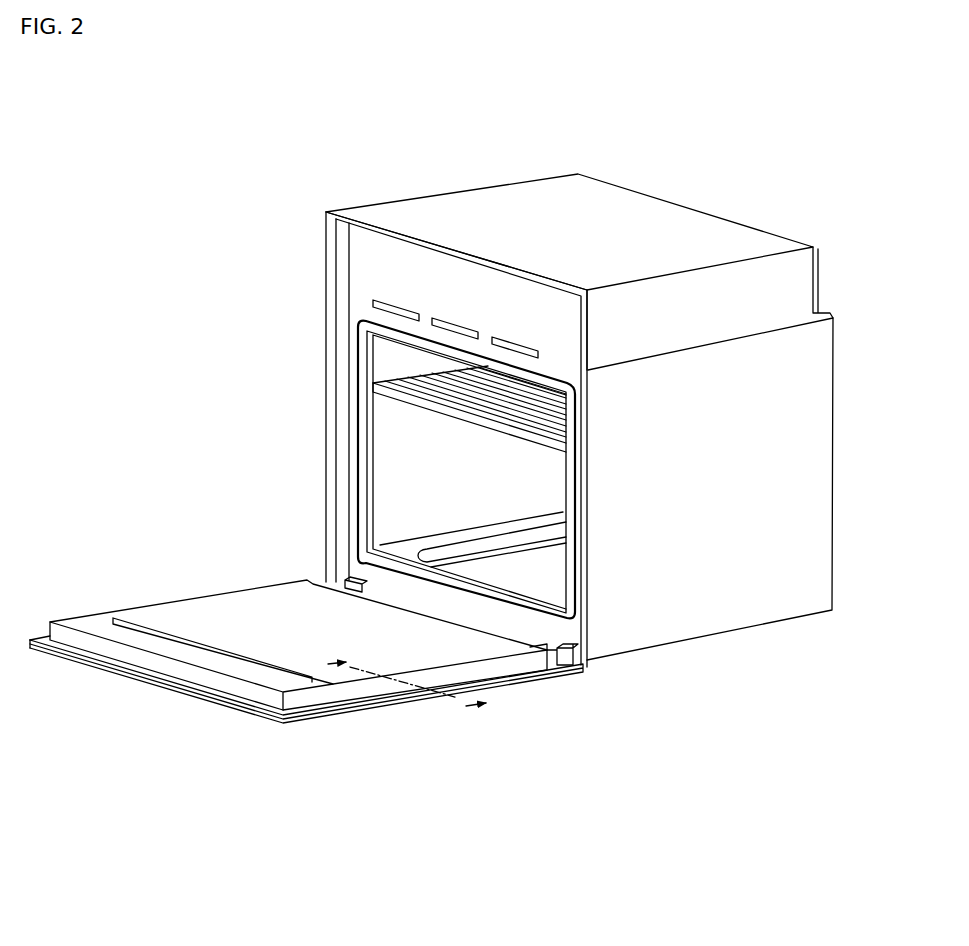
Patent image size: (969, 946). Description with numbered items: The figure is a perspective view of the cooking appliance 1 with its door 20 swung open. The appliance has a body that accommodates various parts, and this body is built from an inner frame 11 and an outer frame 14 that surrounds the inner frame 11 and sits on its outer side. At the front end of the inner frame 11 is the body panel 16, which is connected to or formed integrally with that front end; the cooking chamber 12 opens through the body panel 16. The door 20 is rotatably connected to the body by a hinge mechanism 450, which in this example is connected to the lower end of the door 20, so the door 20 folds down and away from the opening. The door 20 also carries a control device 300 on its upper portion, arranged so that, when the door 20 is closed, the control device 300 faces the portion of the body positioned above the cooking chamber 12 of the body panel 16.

The cooking appliance 1 is at (453, 178).
The inner frame 11 is at (388, 423).
The cooking chamber 12 is at (541, 557).
The outer frame 14 is at (820, 424).
The body panel 16 is at (395, 272).
The door 20 is at (313, 735).
The control device 300 is at (70, 603).
The hinge mechanism 450 is at (570, 676).